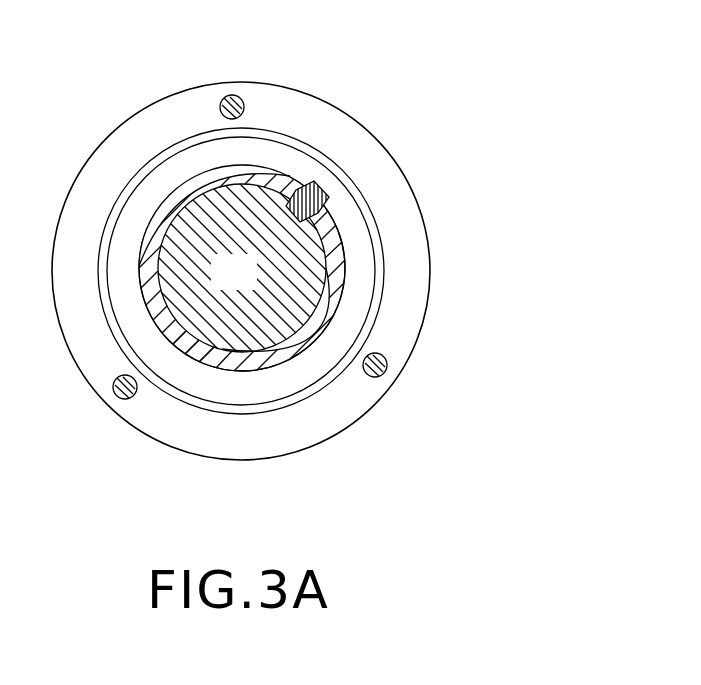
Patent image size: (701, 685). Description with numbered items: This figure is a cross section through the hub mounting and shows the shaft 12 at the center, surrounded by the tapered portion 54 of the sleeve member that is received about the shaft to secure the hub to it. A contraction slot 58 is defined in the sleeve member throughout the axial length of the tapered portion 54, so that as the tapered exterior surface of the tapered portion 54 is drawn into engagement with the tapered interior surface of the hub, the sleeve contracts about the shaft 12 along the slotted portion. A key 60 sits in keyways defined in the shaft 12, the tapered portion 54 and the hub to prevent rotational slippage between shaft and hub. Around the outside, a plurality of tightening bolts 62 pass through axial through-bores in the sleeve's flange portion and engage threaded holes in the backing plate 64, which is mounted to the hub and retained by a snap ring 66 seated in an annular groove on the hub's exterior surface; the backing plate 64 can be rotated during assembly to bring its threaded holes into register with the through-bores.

The shaft 12 is at (250, 287).
The tapered portion 54 is at (264, 359).
The contraction slot 58 is at (178, 340).
The key 60 is at (318, 192).
The tightening bolts 62 is at (230, 95).
The backing plate 64 is at (405, 250).
The snap ring 66 is at (332, 375).